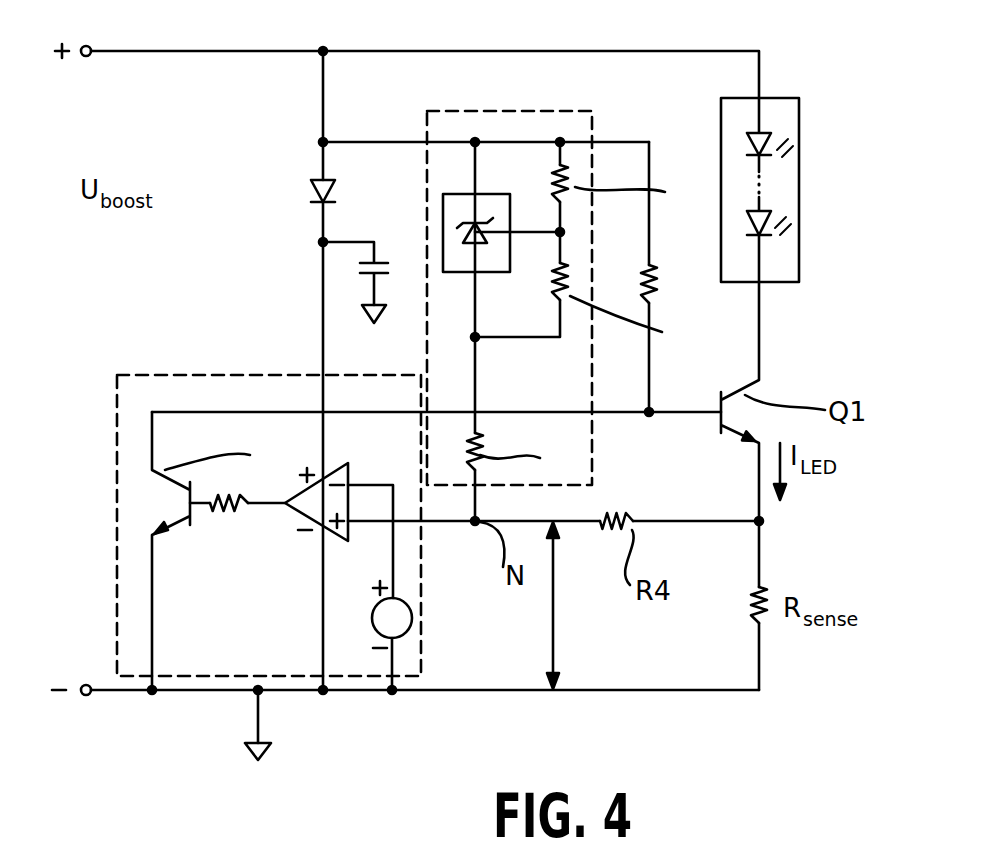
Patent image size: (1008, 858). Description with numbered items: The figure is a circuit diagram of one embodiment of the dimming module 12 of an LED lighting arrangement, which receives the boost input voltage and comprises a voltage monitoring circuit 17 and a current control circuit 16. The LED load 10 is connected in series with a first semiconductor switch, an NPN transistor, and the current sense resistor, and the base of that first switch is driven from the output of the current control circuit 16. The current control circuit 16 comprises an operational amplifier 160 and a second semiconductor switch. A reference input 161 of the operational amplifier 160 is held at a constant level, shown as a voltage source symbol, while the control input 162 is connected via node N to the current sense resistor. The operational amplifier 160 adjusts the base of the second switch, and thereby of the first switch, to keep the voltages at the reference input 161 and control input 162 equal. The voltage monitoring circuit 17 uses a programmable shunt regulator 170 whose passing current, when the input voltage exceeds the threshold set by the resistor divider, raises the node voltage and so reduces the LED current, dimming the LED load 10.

The LED load 10 is at (780, 98).
The dimming module 12 is at (276, 198).
The current control circuit 16 is at (307, 568).
The voltage monitoring circuit 17 is at (565, 260).
The operational amplifier 160 is at (292, 515).
The reference input 161 is at (365, 482).
The control input 162 is at (430, 523).
The programmable shunt regulator 170 is at (497, 272).